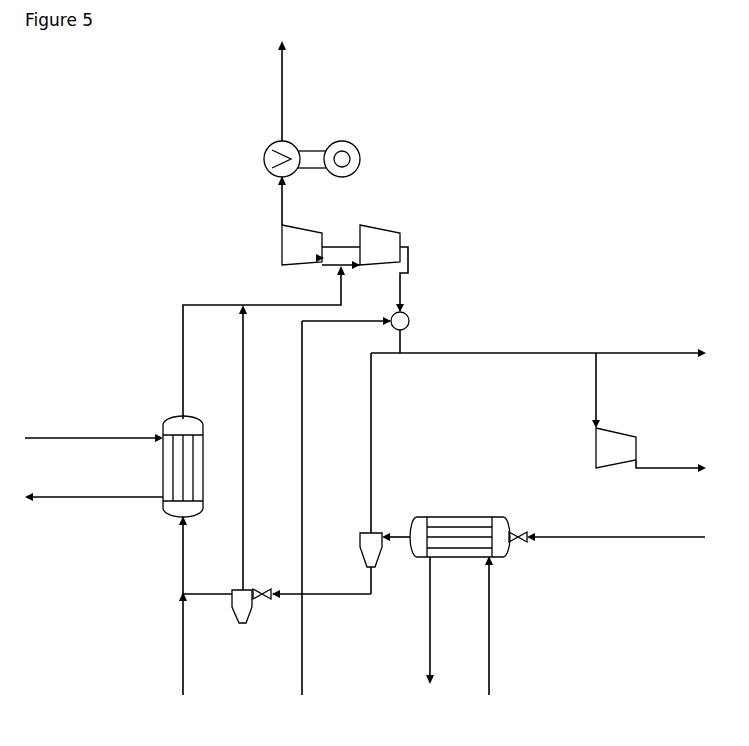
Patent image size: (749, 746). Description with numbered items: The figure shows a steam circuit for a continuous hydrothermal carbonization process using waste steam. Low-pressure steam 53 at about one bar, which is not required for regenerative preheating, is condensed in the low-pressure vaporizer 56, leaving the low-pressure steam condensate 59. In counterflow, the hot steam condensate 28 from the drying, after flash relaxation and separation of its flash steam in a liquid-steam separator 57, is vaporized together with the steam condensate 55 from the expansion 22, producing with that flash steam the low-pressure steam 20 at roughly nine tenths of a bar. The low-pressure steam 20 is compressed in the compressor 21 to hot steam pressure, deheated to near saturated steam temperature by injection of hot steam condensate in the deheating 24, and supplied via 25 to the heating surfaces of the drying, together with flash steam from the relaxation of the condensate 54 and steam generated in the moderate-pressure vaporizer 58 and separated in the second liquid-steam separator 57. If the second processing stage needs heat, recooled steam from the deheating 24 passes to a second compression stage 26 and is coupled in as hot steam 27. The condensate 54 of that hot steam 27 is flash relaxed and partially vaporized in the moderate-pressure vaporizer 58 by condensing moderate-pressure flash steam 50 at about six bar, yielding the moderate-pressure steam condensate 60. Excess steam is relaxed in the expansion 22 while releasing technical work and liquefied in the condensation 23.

The low-pressure steam 20 is at (264, 428).
The compressor 21 is at (380, 251).
The expansion 22 is at (295, 245).
The condensation 23 is at (290, 159).
The deheating by injection of hot steam condensate 24 is at (377, 331).
The supply to heating surfaces of the drying 25 is at (538, 418).
The second compression stage 26 is at (655, 485).
The hot steam 27 is at (637, 447).
The hot steam condensate 28 is at (281, 508).
The moderate-pressure flash steam 50 is at (507, 625).
The low-pressure steam 53 is at (94, 416).
The condensate 54 is at (607, 555).
The steam condensate 55 is at (233, 368).
The low-pressure vaporizer 56 is at (162, 466).
The liquid-steam separator 57 is at (296, 580).
The moderate-pressure vaporizer 58 is at (460, 509).
The low-pressure steam condensate 59 is at (94, 516).
The moderate-pressure steam condensate 60 is at (410, 620).